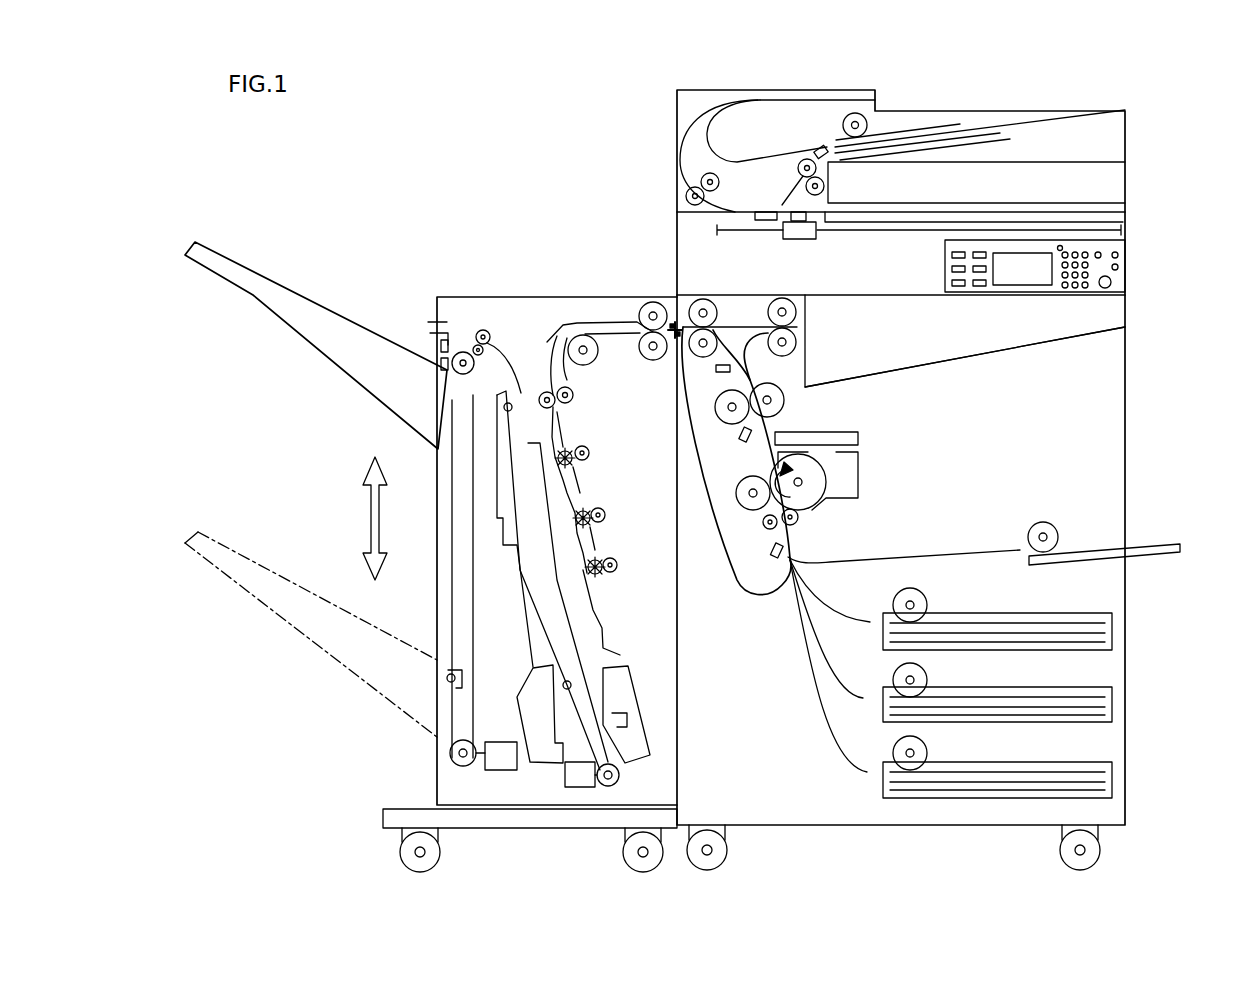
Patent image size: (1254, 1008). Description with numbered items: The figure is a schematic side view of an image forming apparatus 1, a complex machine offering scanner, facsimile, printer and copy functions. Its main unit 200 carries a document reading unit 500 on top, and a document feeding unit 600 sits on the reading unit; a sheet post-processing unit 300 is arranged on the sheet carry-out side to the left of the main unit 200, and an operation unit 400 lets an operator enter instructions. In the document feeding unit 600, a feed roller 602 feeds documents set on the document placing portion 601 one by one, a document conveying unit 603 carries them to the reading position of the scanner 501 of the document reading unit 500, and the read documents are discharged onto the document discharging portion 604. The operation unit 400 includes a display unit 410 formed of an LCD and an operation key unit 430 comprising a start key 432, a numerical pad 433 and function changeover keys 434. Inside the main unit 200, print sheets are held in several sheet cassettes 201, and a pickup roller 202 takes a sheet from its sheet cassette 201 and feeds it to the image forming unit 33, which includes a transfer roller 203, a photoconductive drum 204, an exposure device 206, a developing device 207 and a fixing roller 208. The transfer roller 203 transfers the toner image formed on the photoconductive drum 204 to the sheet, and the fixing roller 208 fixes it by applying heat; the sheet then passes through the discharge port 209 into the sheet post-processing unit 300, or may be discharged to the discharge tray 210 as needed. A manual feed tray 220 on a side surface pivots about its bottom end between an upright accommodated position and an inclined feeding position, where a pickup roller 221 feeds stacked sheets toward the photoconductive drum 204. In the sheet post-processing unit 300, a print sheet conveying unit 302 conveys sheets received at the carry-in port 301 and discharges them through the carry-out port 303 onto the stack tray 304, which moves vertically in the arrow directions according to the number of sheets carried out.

The image forming apparatus 1 is at (550, 100).
The image forming unit 33 is at (845, 418).
The main unit 200 is at (1100, 440).
The sheet cassette 201 is at (1107, 630).
The pickup roller 202 is at (927, 606).
The transfer roller 203 is at (752, 510).
The photoconductive drum 204 is at (812, 500).
The exposure device 206 is at (858, 437).
The developing device 207 is at (858, 470).
The fixing roller 208 is at (730, 425).
The discharge port 209 is at (701, 305).
The discharge tray 210 is at (993, 364).
The manual feed tray 220 is at (1142, 542).
The pickup roller 221 is at (1035, 522).
The sheet post-processing unit 300 is at (505, 290).
The carry-in port 301 is at (653, 300).
The print sheet conveying unit 302 is at (585, 325).
The carry-out port 303 is at (435, 325).
The stack tray 304 is at (360, 405).
The operation unit 400 is at (1133, 270).
The display unit 410 is at (1020, 262).
The operation key unit 430 is at (1132, 285).
The start key 432 is at (1102, 290).
The numerical pad 433 is at (1088, 288).
The function changeover keys 434 is at (945, 270).
The document reading unit 500 is at (1133, 213).
The scanner 501 is at (805, 240).
The document feeding unit 600 is at (950, 107).
The document placing portion 601 is at (1048, 115).
The feed roller 602 is at (868, 125).
The document conveying unit 603 is at (735, 160).
The document discharging portion 604 is at (932, 203).